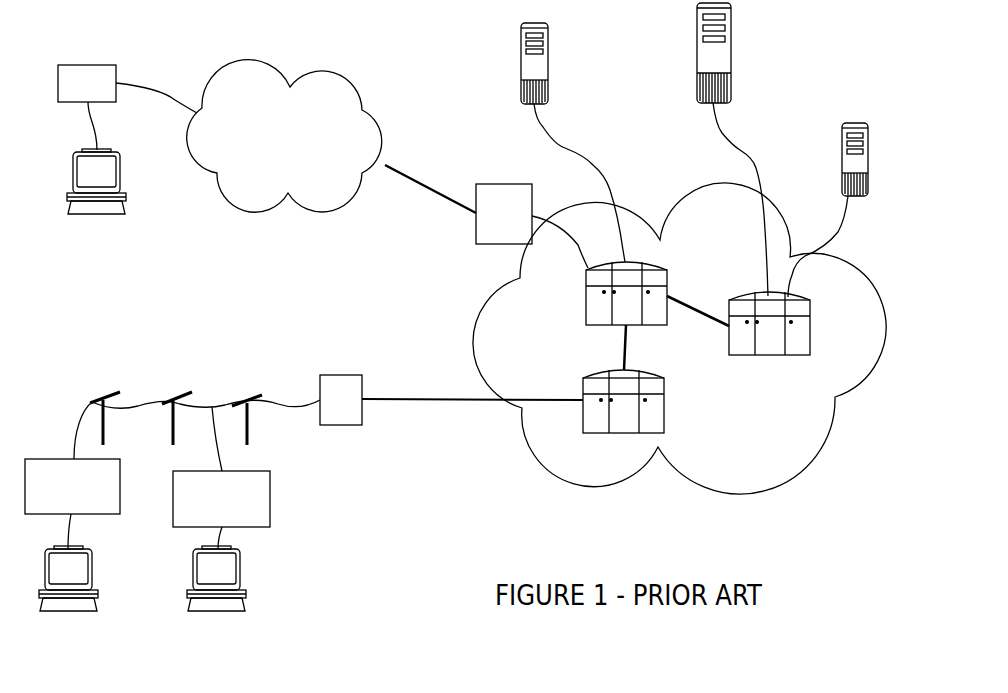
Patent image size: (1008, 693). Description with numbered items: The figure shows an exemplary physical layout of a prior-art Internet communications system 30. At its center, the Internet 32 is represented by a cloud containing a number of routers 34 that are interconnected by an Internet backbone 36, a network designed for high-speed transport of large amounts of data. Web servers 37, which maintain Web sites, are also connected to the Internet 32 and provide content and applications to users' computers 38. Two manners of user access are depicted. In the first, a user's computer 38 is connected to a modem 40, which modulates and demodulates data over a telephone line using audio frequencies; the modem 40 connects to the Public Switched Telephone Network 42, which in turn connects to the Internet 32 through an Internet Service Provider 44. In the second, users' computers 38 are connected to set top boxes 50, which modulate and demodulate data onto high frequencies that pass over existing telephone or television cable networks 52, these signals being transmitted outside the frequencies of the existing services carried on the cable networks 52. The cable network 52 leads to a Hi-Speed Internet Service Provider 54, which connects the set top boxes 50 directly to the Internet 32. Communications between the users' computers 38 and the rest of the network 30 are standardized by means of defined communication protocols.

The Internet communications system 30 is at (434, 484).
The Internet 32 is at (783, 438).
The router 34 is at (812, 335).
The Internet backbone 36 is at (703, 316).
The Web server 37 is at (565, 70).
The user's computer 38 is at (135, 191).
The modem 40 is at (88, 60).
The Public Switched Telephone Network 42 is at (262, 65).
The Internet Service Provider 44 is at (503, 182).
The set top box 50 is at (55, 457).
The telephone or television cable network 52 is at (148, 395).
The Hi-Speed Internet Service Provider 54 is at (341, 373).